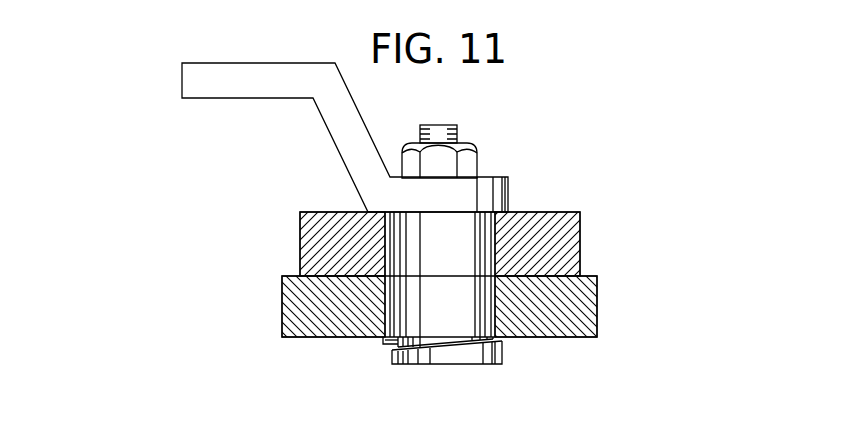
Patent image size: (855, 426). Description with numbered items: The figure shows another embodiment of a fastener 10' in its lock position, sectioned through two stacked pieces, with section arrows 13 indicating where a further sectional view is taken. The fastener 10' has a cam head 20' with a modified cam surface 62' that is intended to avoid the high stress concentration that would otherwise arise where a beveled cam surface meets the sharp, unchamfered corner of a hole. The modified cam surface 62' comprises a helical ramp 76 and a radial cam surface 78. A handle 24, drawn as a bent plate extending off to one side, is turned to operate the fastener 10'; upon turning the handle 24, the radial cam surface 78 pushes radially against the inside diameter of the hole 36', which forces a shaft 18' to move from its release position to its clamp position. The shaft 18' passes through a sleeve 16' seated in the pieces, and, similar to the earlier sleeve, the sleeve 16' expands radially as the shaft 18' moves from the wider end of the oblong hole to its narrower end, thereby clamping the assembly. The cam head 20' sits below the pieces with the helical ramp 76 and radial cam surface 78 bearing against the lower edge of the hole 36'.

The fastener 10' is at (638, 110).
The section line 13 is at (318, 233).
The sleeve 16' is at (445, 257).
The shaft 18' is at (467, 139).
The cam head 20' is at (447, 372).
The handle 24 is at (227, 99).
The hole 36' is at (356, 353).
The modified cam surface 62' is at (370, 370).
The helical ramp 76 is at (445, 343).
The radial cam surface 78 is at (505, 333).